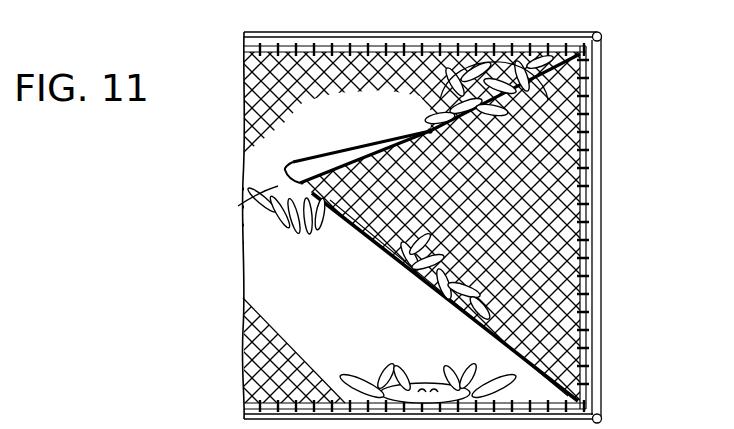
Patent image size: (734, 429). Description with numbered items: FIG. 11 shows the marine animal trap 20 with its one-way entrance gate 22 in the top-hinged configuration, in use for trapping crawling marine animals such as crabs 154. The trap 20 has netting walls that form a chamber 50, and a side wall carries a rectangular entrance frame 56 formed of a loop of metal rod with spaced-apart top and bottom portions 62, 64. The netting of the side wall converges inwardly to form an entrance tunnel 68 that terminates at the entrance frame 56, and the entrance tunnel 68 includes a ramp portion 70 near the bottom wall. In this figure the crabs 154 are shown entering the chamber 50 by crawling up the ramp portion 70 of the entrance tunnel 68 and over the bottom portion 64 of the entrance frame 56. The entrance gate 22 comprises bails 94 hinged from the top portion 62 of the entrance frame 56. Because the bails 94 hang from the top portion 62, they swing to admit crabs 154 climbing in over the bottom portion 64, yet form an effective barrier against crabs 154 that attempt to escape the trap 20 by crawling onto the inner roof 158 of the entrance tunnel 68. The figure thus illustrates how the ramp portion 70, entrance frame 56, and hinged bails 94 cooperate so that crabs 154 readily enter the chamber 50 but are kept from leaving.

The marine animal trap 20 is at (634, 73).
The one-way entrance gate 22 is at (378, 126).
The chamber 50 is at (316, 286).
The entrance frame 56 is at (393, 161).
The top portion 62 is at (433, 134).
The bottom portion 64 is at (331, 190).
The entrance tunnel 68 is at (557, 170).
The ramp portion 70 is at (443, 300).
The bail 94 is at (344, 150).
The crab 154 is at (456, 66).
The inner roof 158 is at (539, 64).